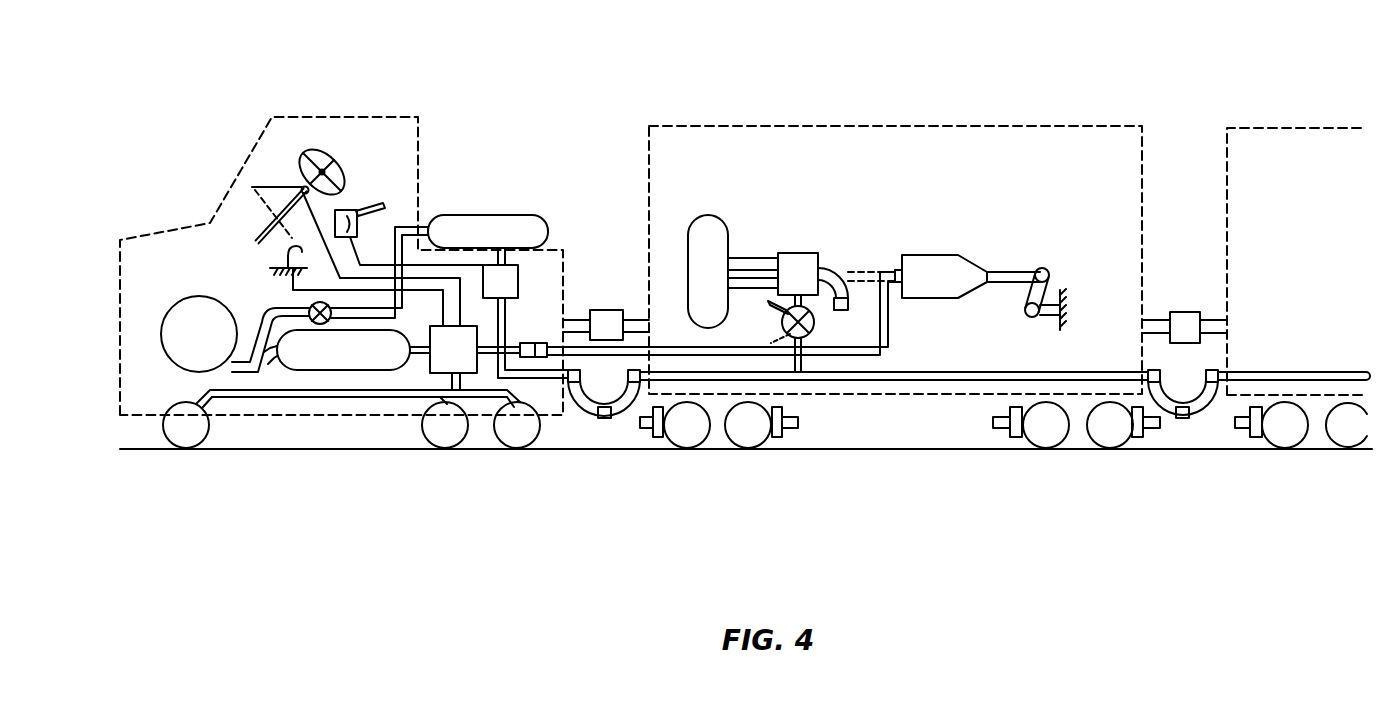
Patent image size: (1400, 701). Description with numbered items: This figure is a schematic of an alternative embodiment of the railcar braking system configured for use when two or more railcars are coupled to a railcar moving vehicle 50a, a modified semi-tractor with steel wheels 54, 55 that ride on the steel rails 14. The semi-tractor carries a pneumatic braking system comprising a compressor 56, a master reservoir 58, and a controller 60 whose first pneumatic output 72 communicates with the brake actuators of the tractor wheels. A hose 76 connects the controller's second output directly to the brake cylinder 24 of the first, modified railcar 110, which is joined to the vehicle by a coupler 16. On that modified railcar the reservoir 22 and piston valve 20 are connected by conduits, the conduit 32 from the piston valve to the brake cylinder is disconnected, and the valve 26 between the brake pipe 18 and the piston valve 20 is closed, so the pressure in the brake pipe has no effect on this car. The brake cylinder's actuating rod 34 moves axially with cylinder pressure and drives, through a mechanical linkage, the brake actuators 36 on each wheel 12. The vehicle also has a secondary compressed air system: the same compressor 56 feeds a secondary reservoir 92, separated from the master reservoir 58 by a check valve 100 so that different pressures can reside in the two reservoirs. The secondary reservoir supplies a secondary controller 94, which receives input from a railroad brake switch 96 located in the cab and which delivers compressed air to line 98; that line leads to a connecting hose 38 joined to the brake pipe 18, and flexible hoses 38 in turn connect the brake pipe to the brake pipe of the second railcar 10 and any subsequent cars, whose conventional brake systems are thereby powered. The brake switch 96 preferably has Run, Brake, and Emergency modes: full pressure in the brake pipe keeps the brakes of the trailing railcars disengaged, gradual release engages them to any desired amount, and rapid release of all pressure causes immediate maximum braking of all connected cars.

The railcar 10 is at (1257, 124).
The steel wheels 12 is at (752, 428).
The steel rails 14 is at (322, 456).
The coupler 16 is at (608, 322).
The brake pipe 18 is at (940, 373).
The piston valve 20 is at (798, 274).
The reservoir 22 is at (733, 271).
The brake cylinder 24 is at (941, 276).
The valve 26 is at (814, 322).
The conduit 32 is at (837, 266).
The actuating rod 34 is at (1002, 270).
The brake actuators 36 is at (780, 433).
The flexible hoses 38 is at (585, 417).
The railcar moving vehicle 50a is at (367, 109).
The steel wheels 54 is at (190, 436).
The steel wheels 55 is at (450, 433).
The compressor 56 is at (235, 334).
The master reservoir 58 is at (353, 350).
The controller 60 is at (453, 358).
The first pneumatic output 72 is at (333, 397).
The hose 76 is at (888, 322).
The secondary reservoir 92 is at (439, 266).
The secondary controller 94 is at (500, 273).
The railroad brake switch 96 is at (356, 211).
The line 98 is at (507, 317).
The check valve 100 is at (309, 308).
The modified railcar 110 is at (879, 124).